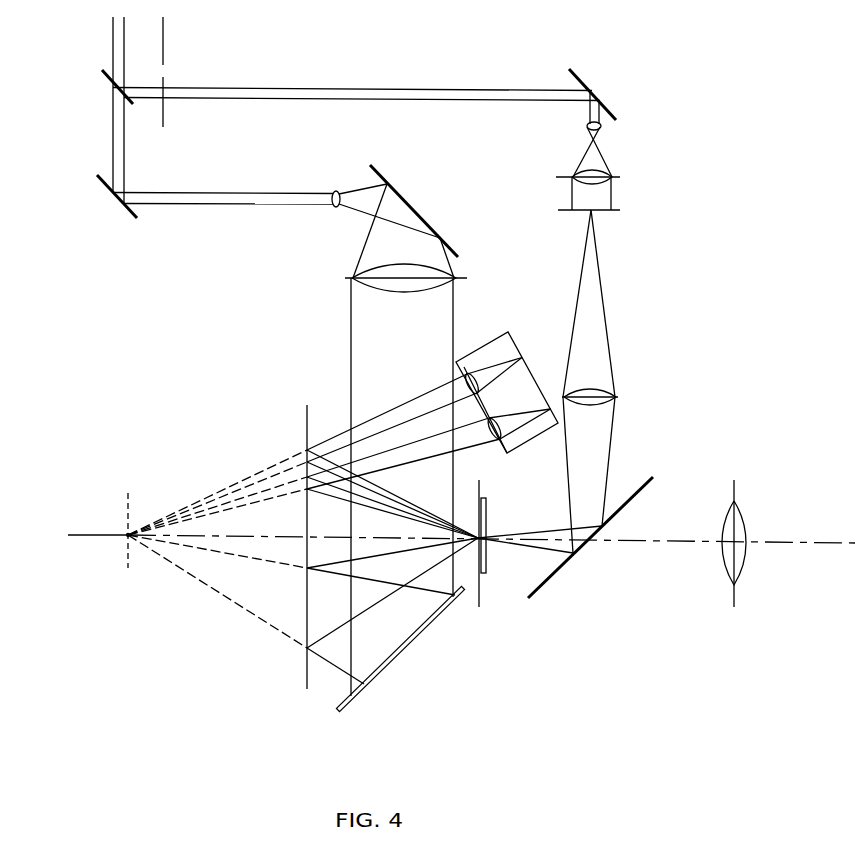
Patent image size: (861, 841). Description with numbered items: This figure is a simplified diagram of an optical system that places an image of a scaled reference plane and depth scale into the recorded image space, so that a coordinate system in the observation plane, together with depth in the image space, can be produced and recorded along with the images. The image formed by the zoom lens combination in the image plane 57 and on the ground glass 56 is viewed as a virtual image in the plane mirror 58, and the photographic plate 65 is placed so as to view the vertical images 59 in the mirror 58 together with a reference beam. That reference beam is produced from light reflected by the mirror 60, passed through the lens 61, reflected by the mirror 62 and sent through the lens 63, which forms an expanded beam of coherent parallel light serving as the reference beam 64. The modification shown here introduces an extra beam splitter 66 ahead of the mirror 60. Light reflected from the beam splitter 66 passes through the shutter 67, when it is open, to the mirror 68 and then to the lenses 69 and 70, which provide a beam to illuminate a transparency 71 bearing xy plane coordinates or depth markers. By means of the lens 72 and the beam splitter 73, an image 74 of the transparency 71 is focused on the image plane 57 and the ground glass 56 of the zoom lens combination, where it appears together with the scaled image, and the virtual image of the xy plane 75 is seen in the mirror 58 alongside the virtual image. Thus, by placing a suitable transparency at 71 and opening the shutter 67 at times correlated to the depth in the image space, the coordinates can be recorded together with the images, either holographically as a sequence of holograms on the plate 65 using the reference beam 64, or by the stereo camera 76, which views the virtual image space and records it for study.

The ground glass 56 is at (486, 570).
The image plane 57 is at (735, 598).
The plane mirror 58 is at (304, 684).
The vertical images 59 is at (127, 537).
The mirror 60 is at (125, 210).
The lens 61 is at (333, 207).
The mirror 62 is at (386, 183).
The lens 63 is at (352, 277).
The reference beam 64 is at (350, 338).
The photographic plate 65 is at (383, 672).
The beam splitter 66 is at (108, 80).
The shutter 67 is at (163, 51).
The mirror 68 is at (585, 84).
The lens 69 is at (600, 128).
The lens 70 is at (617, 178).
The transparency 71 is at (618, 211).
The lens 72 is at (618, 397).
The beam splitter 73 is at (649, 479).
The image 74 is at (486, 535).
The virtual image of X-Y plane 75 is at (126, 499).
The stereo camera 76 is at (482, 346).